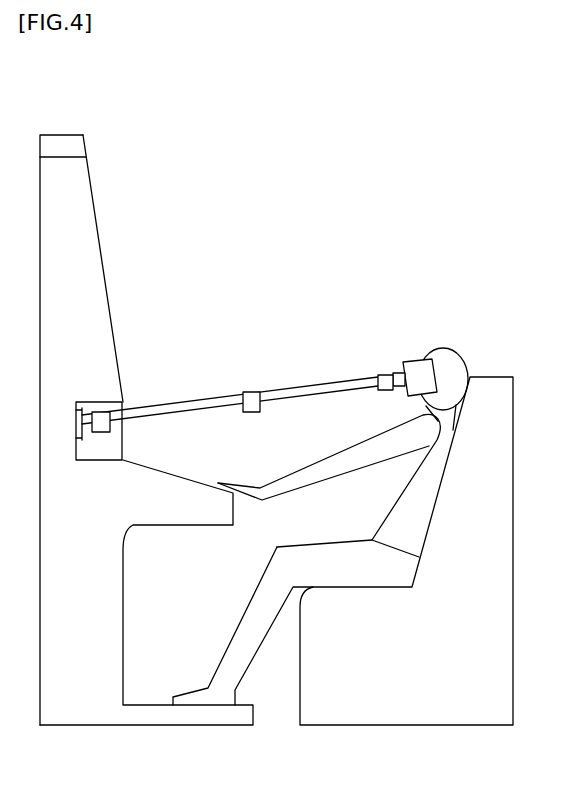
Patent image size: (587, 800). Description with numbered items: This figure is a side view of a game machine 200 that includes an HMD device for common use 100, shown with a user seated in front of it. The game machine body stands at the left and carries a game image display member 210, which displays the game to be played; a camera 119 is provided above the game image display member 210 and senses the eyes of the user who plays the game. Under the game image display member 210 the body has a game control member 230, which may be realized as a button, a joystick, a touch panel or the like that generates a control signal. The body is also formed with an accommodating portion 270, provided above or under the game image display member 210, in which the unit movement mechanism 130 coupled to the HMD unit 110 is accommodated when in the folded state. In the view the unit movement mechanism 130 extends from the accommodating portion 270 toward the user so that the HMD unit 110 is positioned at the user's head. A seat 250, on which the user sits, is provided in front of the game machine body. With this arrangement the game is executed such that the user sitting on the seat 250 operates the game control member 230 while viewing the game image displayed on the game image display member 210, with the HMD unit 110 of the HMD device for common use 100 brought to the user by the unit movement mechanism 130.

The HMD device for common use 100 is at (266, 331).
The HMD unit 110 is at (408, 362).
The camera 119 is at (86, 149).
The unit movement mechanism 130 is at (221, 394).
The game machine 200 is at (146, 396).
The game image display member 210 is at (107, 293).
The game control member 230 is at (182, 476).
The seat 250 is at (497, 384).
The accommodating portion 270 is at (98, 402).